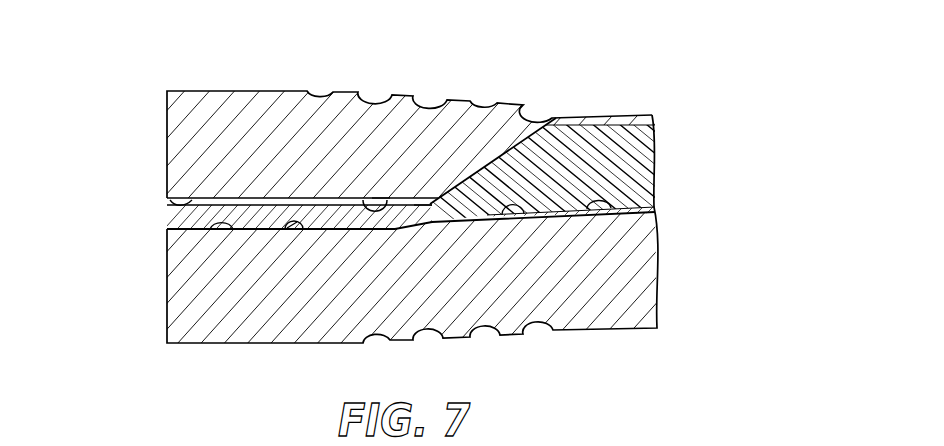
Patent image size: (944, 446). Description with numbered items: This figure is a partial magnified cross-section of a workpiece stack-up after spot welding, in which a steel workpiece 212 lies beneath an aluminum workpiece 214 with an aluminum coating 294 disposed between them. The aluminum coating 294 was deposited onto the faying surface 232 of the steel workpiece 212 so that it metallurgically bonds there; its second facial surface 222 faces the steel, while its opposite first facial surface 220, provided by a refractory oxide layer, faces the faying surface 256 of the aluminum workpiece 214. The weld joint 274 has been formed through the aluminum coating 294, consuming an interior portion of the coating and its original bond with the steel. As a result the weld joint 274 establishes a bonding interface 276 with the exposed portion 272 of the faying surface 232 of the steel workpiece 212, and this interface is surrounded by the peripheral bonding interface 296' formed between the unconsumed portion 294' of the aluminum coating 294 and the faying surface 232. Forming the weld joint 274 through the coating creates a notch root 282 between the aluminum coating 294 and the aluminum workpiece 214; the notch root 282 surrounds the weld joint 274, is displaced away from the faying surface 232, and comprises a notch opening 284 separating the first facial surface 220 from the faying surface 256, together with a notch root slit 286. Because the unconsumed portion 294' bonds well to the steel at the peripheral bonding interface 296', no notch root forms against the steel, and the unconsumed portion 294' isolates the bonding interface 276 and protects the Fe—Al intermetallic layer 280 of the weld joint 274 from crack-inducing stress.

The steel workpiece 212 is at (192, 282).
The aluminum workpiece 214 is at (195, 148).
The first facial surface 220 is at (248, 197).
The second facial surface 222 is at (262, 230).
The faying surface 232 is at (205, 231).
The faying surface 256 is at (170, 200).
The exposed portion 272 is at (618, 212).
The weld joint 274 is at (651, 132).
The bonding interface 276 is at (498, 214).
The Fe—Al intermetallic layer 280 is at (567, 218).
The notch root 282 is at (378, 196).
The notch opening 284 is at (363, 200).
The notch root slit 286 is at (421, 205).
The aluminum coating 294 is at (147, 240).
The unconsumed portion 294' is at (253, 124).
The peripheral bonding interface 296' is at (342, 258).